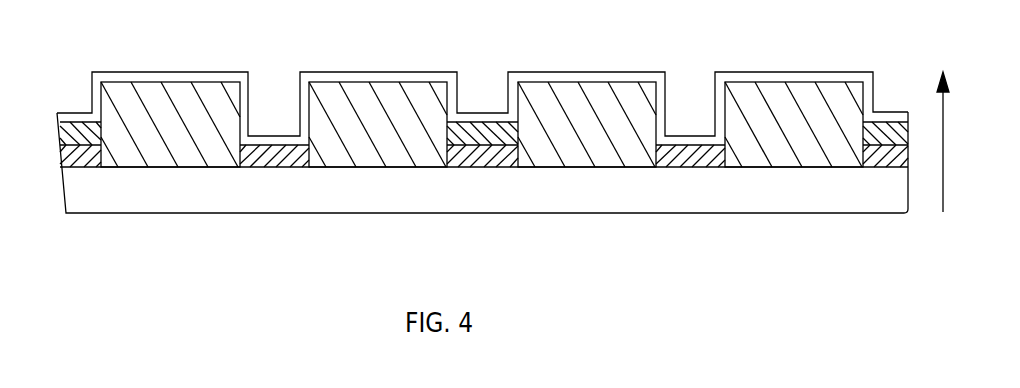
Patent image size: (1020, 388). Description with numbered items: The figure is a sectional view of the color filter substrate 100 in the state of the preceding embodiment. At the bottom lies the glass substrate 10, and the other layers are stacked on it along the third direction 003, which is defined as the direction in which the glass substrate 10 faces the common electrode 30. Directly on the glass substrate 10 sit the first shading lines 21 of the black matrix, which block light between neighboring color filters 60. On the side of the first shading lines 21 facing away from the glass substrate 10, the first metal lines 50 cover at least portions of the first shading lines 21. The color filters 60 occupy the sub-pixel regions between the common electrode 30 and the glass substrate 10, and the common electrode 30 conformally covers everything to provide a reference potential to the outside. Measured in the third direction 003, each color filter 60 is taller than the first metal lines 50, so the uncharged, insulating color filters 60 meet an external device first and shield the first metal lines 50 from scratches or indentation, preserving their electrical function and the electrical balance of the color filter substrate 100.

The color filter substrate 100 is at (132, 29).
The glass substrate 10 is at (798, 202).
The first shading lines 21 is at (695, 158).
The common electrode 30 is at (275, 138).
The first metal lines 50 is at (477, 133).
The color filters 60 is at (158, 143).
The third direction 003 is at (938, 126).